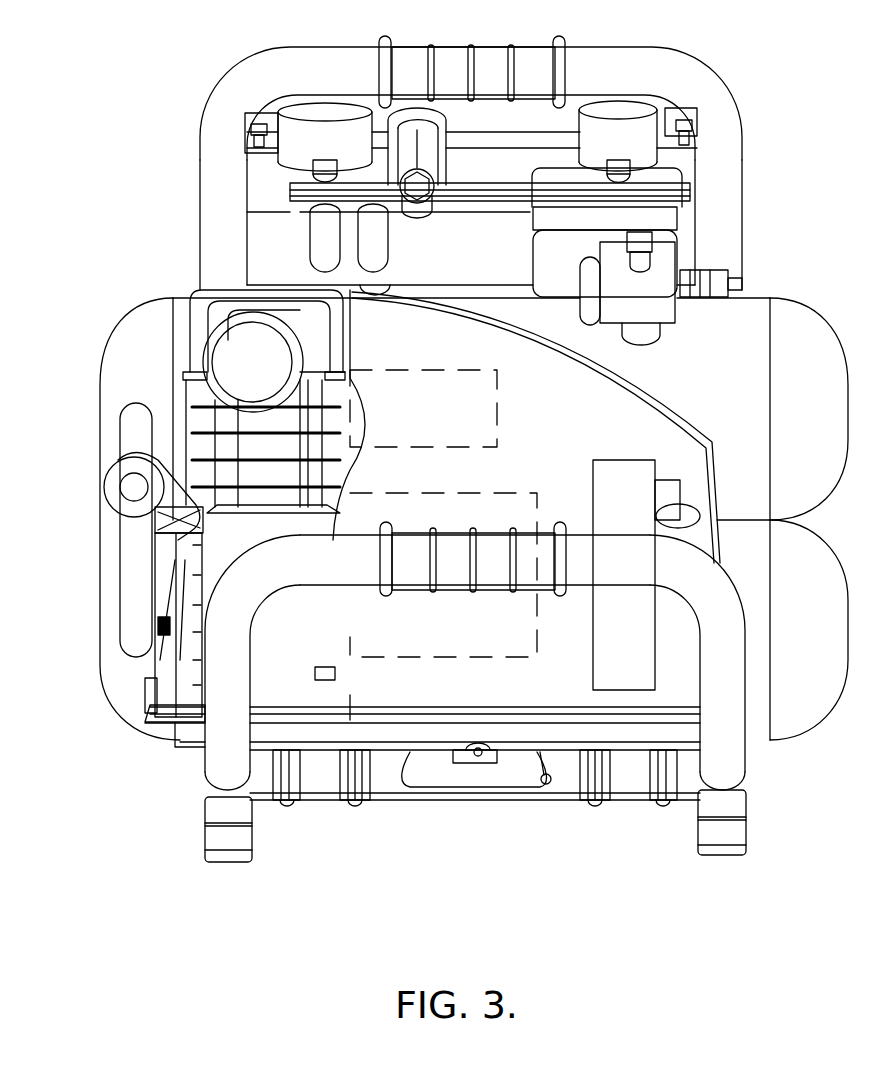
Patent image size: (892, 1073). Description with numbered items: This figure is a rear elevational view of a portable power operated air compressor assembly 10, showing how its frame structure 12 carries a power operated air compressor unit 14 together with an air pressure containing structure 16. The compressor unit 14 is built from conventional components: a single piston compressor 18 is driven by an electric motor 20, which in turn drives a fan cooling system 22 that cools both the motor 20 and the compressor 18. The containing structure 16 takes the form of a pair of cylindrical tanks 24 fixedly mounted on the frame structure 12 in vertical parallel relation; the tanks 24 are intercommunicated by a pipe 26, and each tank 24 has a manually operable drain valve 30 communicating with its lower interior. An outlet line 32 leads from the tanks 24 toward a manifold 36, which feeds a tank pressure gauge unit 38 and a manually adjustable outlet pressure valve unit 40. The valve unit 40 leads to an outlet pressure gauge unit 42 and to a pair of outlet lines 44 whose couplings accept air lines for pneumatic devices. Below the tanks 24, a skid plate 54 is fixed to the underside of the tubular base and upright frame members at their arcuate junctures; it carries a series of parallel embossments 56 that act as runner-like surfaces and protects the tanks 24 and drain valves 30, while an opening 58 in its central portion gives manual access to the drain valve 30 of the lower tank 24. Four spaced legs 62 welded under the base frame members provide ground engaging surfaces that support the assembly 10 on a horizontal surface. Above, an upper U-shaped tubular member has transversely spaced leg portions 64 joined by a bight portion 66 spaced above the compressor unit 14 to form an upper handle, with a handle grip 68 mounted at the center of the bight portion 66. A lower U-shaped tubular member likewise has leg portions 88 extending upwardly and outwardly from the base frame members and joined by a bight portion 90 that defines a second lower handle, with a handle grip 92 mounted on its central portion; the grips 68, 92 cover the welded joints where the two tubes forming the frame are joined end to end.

The power operated air compressor assembly 10 is at (197, 76).
The frame structure 12 is at (722, 61).
The power operated air compressor unit 14 is at (196, 287).
The air pressure containing structure 16 is at (92, 457).
The compressor 18 is at (190, 595).
The electric motor 20 is at (448, 500).
The fan cooling system 22 is at (625, 394).
The cylindrical tanks 24 is at (810, 478).
The pipe 26 is at (165, 548).
The drain valve 30 is at (478, 765).
The outlet line 32 is at (640, 338).
The manifold 36 is at (670, 192).
The tank pressure gauge unit 38 is at (640, 125).
The manually adjustable outlet pressure valve unit 40 is at (420, 150).
The outlet pressure gauge unit 42 is at (305, 125).
The outlet lines 44 is at (322, 255).
The skid plate 54 is at (380, 782).
The embossments 56 is at (352, 806).
The opening 58 is at (545, 785).
The legs 62 is at (226, 840).
The tubular leg portions 64 is at (210, 202).
The bight portion 66 is at (341, 62).
The handle grip 68 is at (486, 50).
The leg portions 88 is at (730, 672).
The bight portion 90 is at (350, 565).
The handle grip 92 is at (458, 572).